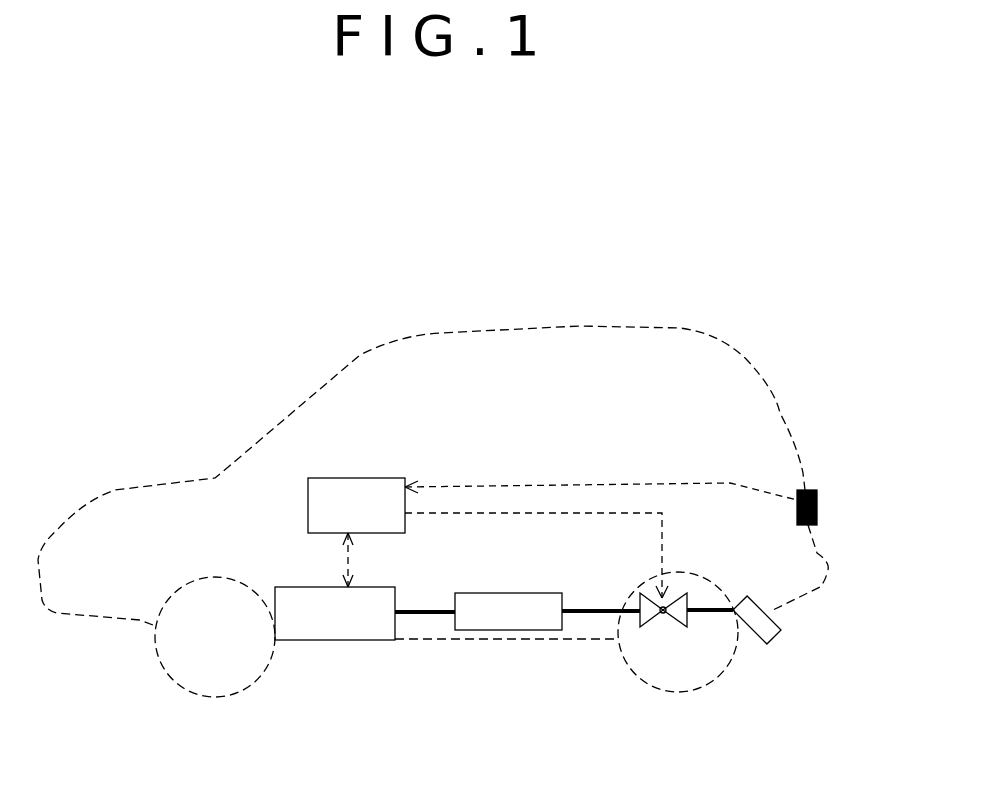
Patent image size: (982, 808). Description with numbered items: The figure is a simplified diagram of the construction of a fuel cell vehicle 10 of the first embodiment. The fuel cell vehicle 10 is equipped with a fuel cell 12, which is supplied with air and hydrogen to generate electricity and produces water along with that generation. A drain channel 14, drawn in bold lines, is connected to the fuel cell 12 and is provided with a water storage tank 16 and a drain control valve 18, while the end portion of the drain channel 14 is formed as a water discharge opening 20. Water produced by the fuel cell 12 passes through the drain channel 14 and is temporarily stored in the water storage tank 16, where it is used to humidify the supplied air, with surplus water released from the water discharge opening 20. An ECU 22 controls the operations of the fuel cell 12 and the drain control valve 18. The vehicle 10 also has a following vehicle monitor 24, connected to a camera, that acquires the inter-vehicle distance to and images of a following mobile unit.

The fuel cell vehicle 10 is at (430, 293).
The fuel cell 12 is at (313, 636).
The drain channel 14 is at (432, 614).
The water storage tank 16 is at (495, 626).
The drain control valve 18 is at (640, 627).
The water discharge opening 20 is at (778, 618).
The ECU 22 is at (367, 478).
The following vehicle monitor 24 is at (818, 498).